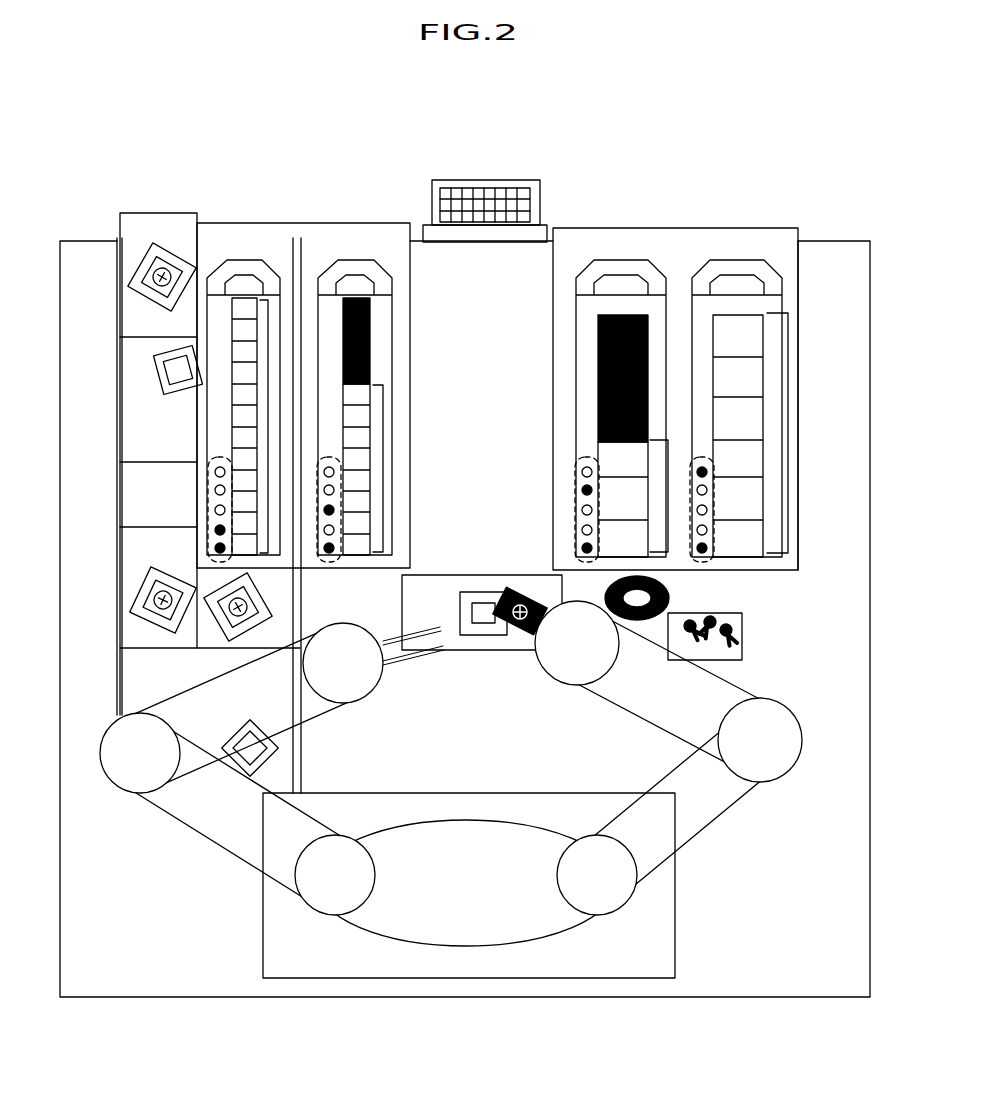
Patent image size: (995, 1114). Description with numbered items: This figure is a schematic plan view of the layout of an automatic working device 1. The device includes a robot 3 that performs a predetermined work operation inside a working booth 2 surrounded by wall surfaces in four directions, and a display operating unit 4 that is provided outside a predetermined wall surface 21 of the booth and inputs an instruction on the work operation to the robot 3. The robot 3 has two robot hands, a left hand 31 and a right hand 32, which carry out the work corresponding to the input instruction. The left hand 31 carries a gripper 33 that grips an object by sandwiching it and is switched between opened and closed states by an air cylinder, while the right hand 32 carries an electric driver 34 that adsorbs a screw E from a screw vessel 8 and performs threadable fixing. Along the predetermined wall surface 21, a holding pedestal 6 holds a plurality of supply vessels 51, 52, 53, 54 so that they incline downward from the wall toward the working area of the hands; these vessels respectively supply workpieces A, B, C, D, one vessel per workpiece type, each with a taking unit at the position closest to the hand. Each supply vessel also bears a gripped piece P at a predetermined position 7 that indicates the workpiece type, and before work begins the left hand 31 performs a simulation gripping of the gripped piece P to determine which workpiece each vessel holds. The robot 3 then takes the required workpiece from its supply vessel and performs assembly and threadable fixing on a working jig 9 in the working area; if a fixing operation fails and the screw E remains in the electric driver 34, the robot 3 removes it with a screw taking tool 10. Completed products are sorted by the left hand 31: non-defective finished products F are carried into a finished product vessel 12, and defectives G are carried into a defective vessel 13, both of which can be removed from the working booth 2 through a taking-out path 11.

The automatic working device 1 is at (643, 138).
The working booth 2 is at (148, 998).
The predetermined wall surface 21 is at (832, 241).
The robot 3 is at (466, 933).
The display operating unit 4 is at (503, 180).
The holding pedestal 6 is at (317, 228).
The predetermined position 7 is at (200, 495).
The screw vessel 8 is at (742, 655).
The working jig 9 is at (447, 578).
The screw taking tool 10 is at (670, 598).
The taking-out path 11 is at (125, 492).
The finished product vessel 12 is at (130, 312).
The defective vessel 13 is at (130, 415).
The left hand 31 is at (218, 825).
The right hand 32 is at (715, 805).
The gripper 33 is at (402, 664).
The electric driver 34 is at (517, 636).
The supply vessel 51 is at (617, 265).
The supply vessel 52 is at (357, 262).
The supply vessel 53 is at (740, 265).
The supply vessel 54 is at (248, 262).
The workpiece A is at (668, 497).
The workpiece B is at (383, 470).
The workpiece C is at (788, 433).
The workpiece D is at (268, 422).
The screw E is at (742, 628).
The finished product F is at (140, 265).
The defective G is at (165, 370).
The gripped piece P is at (215, 548).